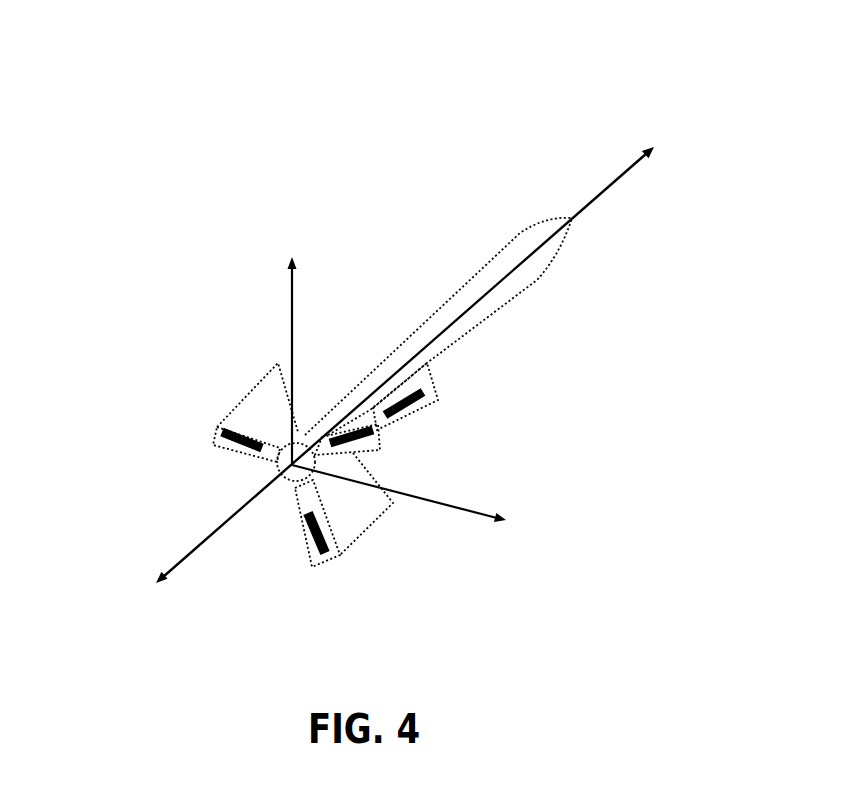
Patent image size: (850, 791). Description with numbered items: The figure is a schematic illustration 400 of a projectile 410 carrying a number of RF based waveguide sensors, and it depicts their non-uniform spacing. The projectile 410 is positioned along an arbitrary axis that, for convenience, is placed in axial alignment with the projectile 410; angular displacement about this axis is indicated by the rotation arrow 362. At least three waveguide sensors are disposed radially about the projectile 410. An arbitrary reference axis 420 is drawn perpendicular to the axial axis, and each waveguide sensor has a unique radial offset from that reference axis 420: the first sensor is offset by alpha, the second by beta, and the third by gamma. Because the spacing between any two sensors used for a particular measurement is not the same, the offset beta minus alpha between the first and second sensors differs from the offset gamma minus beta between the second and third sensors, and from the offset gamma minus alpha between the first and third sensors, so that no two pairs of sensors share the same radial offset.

The coordinate diagram of detector orientation 400 is at (832, 64).
The projectile 410 is at (522, 300).
The reference axis 420 is at (457, 510).
The rotation arrow 362 is at (661, 358).